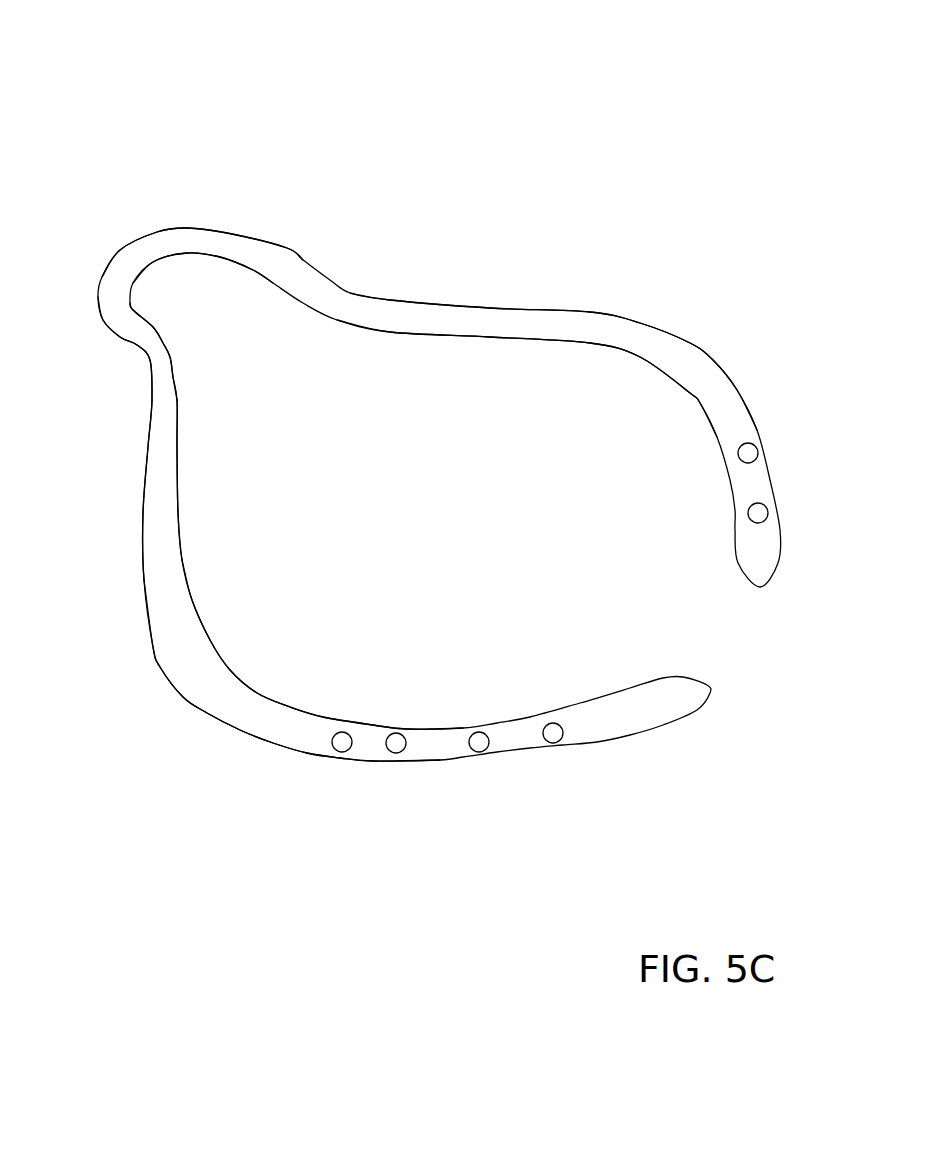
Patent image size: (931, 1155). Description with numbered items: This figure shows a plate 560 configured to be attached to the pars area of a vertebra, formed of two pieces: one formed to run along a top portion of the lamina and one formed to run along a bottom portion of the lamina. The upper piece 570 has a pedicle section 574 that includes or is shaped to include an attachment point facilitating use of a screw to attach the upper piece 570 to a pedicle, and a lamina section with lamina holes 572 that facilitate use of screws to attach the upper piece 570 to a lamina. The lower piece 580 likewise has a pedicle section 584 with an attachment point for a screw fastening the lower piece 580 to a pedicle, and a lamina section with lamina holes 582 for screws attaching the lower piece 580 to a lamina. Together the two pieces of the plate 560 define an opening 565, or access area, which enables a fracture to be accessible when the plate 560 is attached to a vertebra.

The plate 560 is at (148, 81).
The opening 565 is at (248, 525).
The upper piece 570 is at (398, 315).
The lamina holes 572 is at (770, 510).
The pedicle section 574 is at (247, 258).
The lower piece 580 is at (193, 690).
The lamina holes 582 is at (552, 745).
The pedicle section 584 is at (138, 325).